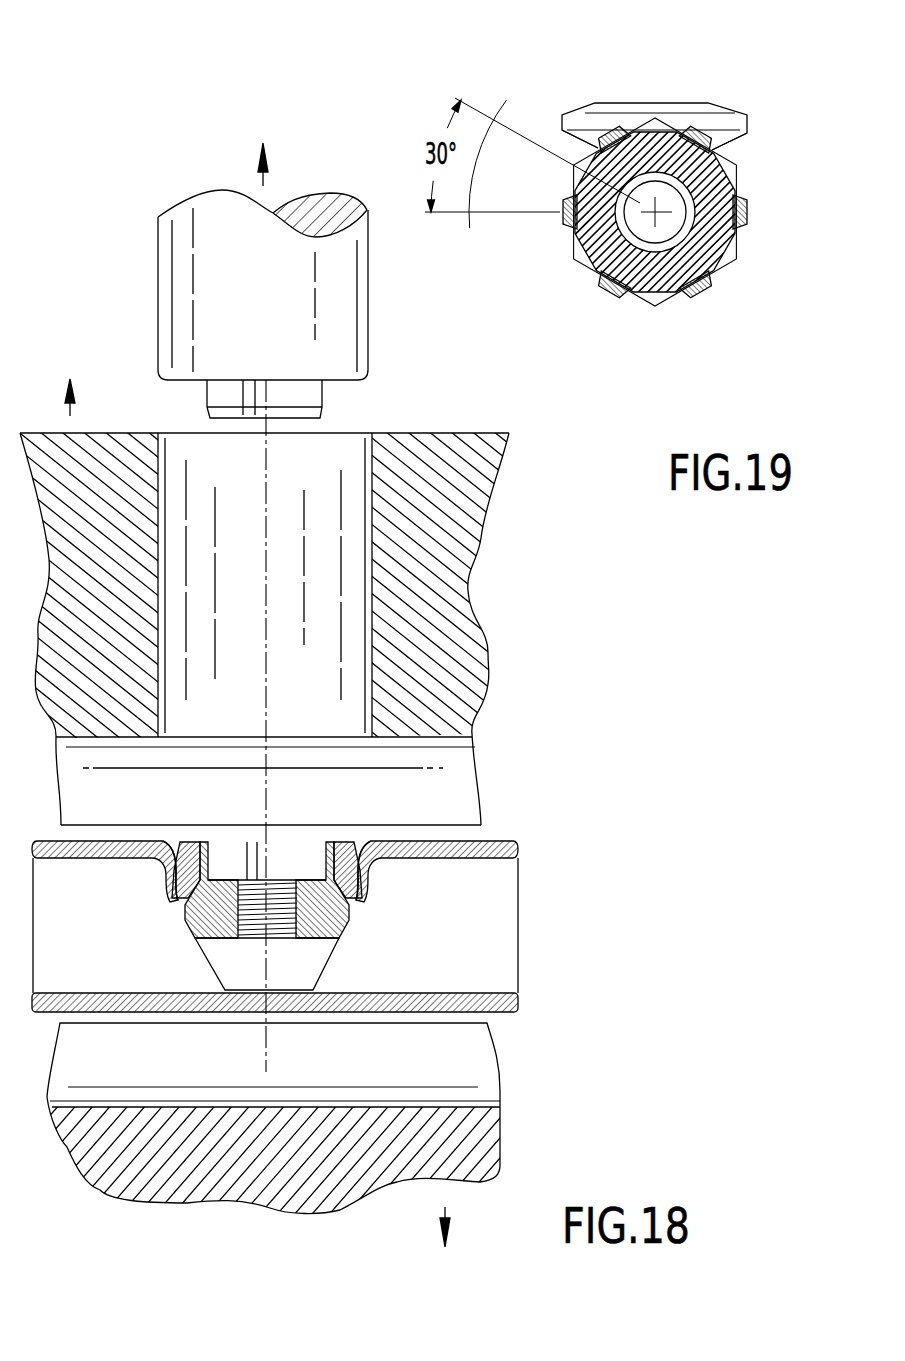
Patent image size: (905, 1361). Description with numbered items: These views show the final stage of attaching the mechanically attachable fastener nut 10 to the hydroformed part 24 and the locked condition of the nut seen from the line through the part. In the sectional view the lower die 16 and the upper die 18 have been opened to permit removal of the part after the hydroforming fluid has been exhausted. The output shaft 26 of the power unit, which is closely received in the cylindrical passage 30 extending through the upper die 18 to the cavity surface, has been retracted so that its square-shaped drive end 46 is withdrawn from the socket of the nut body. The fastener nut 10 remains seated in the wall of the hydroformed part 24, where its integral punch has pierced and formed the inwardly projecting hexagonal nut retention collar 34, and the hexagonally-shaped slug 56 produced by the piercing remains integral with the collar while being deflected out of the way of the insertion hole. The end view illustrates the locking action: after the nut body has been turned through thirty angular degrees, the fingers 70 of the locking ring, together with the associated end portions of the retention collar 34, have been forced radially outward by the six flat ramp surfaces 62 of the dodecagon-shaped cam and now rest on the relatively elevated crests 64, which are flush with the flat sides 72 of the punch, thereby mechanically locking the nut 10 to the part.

In FIG. 18, the mechanically attachable fastener nut 10 is at (365, 861).
In FIG. 19, the mechanically attachable fastener nut 10 is at (650, 231).
In FIG. 18, the lower die 16 is at (500, 1152).
In FIG. 18, the upper die 18 is at (488, 662).
In FIG. 18, the hydroformed part 24 is at (503, 841).
In FIG. 18, the output shaft 26 is at (158, 290).
In FIG. 18, the cylindrical passage 30 is at (158, 488).
In FIG. 18, the nut retention collar 34 is at (373, 865).
In FIG. 18, the drive end 46 is at (282, 398).
In FIG. 18, the hexagonally-shaped slug 56 is at (328, 960).
In FIG. 19, the hexagonally-shaped slug 56 is at (730, 108).
In FIG. 19, the ramp surfaces 62 is at (633, 132).
In FIG. 19, the crests 64 is at (592, 135).
In FIG. 19, the fingers 70 is at (607, 132).
In FIG. 19, the flat sides 72 is at (580, 150).